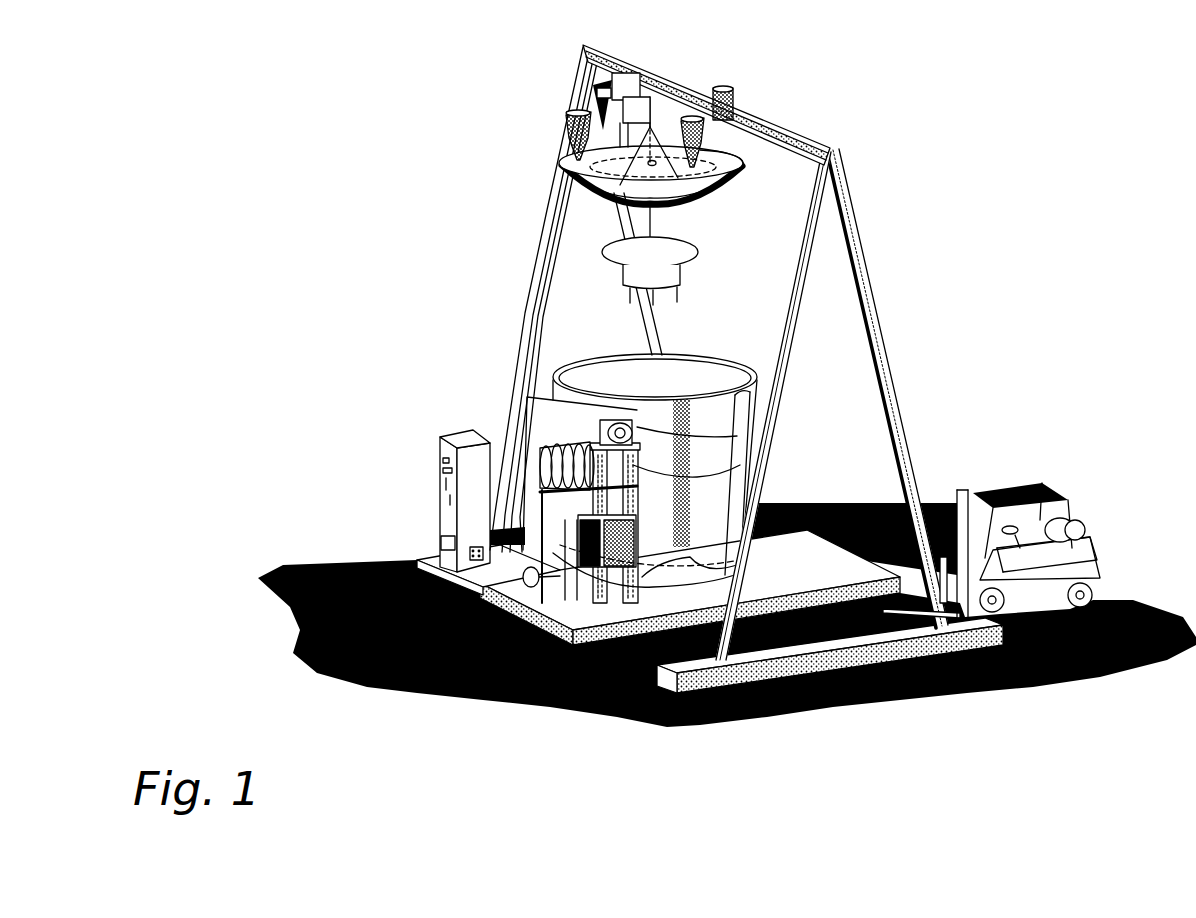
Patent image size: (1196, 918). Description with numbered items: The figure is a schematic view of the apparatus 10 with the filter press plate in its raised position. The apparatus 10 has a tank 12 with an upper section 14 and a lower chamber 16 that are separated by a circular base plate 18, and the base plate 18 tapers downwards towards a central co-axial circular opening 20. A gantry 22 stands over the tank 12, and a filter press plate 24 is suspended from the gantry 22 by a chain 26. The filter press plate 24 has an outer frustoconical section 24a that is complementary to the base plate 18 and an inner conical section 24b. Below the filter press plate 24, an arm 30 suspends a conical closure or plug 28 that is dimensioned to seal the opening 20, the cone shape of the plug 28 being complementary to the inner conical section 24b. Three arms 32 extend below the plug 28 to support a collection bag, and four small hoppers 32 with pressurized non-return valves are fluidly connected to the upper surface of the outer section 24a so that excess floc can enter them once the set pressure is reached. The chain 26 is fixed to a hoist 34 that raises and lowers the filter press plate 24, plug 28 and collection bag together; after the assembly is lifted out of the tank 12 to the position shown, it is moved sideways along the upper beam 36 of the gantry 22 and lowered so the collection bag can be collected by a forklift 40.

The apparatus 10 is at (905, 172).
The tank 12 is at (747, 453).
The upper section 14 is at (700, 372).
The lower chamber 16 is at (735, 523).
The circular base plate 18 is at (697, 458).
The central co-axial circular opening 20 is at (653, 467).
The gantry 22 is at (877, 347).
The filter press plate 24 is at (556, 170).
The outer frustoconical section 24a is at (720, 195).
The inner conical section 24b is at (640, 173).
The chain 26 is at (655, 110).
The conical closure or plug 28 is at (677, 253).
The arm 30 is at (656, 212).
The hoppers 32 is at (733, 90).
The hoist 34 is at (600, 78).
The upper beam 36 is at (790, 128).
The forklift 40 is at (1090, 560).